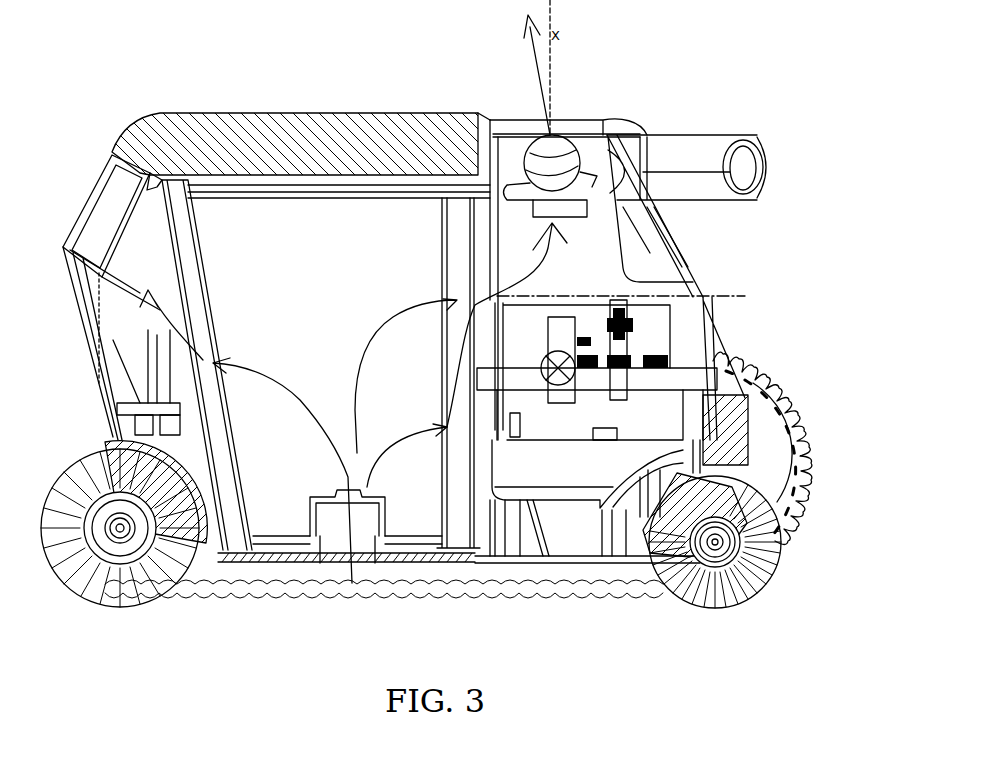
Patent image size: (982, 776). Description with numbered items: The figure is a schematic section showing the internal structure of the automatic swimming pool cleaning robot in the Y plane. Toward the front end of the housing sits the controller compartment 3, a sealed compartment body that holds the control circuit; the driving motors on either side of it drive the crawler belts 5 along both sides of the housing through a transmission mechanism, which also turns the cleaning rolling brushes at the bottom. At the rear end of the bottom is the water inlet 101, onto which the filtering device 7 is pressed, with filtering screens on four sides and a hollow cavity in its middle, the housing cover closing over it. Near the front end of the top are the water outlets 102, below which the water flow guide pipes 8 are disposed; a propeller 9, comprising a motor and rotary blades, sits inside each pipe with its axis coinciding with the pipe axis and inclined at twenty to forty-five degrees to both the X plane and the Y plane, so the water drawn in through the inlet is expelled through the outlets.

The controller compartment 3 is at (620, 352).
The crawler belts 5 is at (783, 400).
The filtering device 7 is at (210, 273).
The water flow guide pipe 8 is at (487, 232).
The propeller 9 is at (533, 155).
The water inlet 101 is at (332, 563).
The water outlet 102 is at (588, 118).